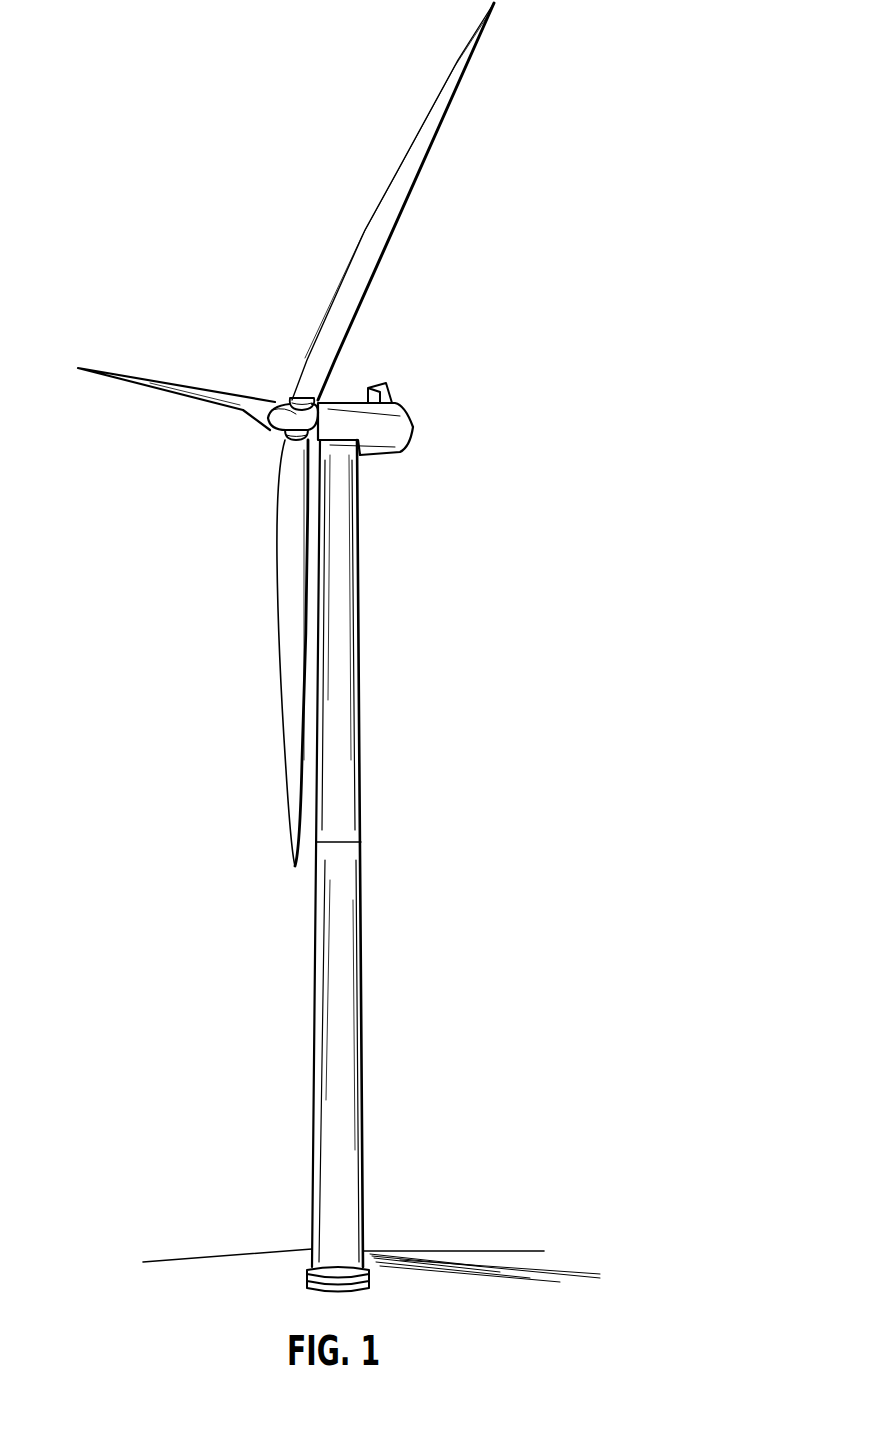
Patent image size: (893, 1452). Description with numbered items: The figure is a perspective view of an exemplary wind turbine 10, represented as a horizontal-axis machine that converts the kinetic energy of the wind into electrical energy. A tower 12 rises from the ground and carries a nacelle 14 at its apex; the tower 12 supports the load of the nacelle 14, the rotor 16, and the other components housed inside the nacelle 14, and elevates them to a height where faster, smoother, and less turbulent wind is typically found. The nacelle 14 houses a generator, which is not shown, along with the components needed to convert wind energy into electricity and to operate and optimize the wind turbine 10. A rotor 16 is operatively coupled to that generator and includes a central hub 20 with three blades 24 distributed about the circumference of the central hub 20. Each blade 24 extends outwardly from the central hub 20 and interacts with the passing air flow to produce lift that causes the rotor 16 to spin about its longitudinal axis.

The wind turbine 10 is at (112, 213).
The tower 12 is at (368, 582).
The nacelle 14 is at (406, 406).
The rotor 16 is at (270, 428).
The central hub 20 is at (290, 398).
The blade 24 is at (430, 156).